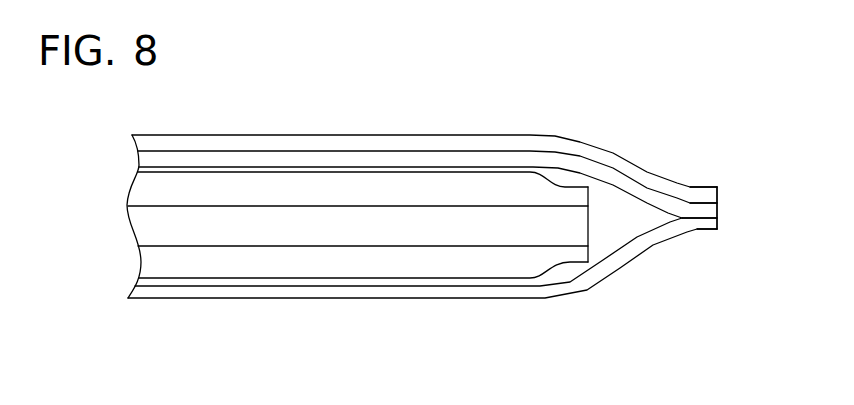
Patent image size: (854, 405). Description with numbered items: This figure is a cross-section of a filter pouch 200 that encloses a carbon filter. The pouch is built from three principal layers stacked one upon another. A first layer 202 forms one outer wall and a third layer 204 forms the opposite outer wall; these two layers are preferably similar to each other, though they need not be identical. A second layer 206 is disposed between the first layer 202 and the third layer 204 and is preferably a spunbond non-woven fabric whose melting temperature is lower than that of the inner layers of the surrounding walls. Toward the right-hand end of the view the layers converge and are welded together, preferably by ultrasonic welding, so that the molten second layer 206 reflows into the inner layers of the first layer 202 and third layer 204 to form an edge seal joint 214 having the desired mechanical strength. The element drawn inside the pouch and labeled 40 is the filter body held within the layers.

The filter pouch 200 is at (546, 113).
The first layer 202 is at (350, 141).
The third layer 204 is at (485, 293).
The second layer 206 is at (258, 158).
The inner member 40 is at (162, 192).
The edge seal joint 214 is at (683, 186).